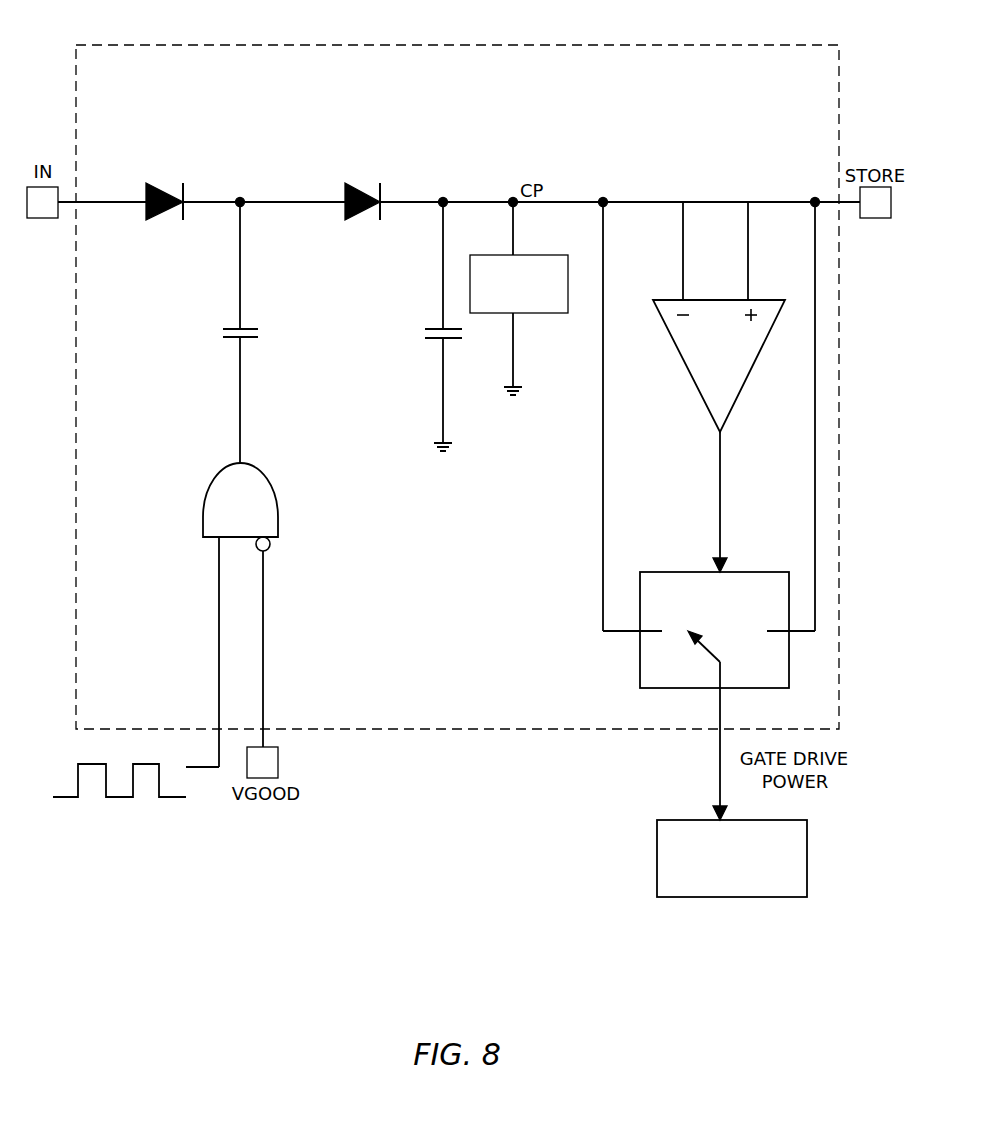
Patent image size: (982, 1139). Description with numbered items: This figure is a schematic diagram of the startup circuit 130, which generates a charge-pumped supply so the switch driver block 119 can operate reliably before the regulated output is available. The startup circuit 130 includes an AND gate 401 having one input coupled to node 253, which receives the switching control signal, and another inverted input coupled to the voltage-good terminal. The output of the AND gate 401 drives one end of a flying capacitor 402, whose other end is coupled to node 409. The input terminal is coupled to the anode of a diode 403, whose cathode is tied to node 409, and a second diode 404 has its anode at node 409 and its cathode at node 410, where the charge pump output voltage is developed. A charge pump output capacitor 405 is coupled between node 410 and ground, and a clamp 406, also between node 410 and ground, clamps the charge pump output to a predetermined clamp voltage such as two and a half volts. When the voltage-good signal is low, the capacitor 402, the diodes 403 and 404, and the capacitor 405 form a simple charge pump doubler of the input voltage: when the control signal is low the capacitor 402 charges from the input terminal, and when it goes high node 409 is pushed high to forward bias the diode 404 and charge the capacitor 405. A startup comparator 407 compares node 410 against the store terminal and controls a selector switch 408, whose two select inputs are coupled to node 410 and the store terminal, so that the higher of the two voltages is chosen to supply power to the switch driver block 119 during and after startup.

The startup circuit 130 is at (472, 102).
The AND gate 401 is at (209, 490).
The flying capacitor 402 is at (232, 338).
The diode 403 is at (167, 215).
The diode 404 is at (363, 215).
The charge pump output capacitor 405 is at (432, 340).
The clamp 406 is at (503, 306).
The startup comparator 407 is at (690, 377).
The selector switch 408 is at (640, 650).
The node 409 is at (243, 192).
The node 410 is at (445, 195).
The node 253 is at (219, 676).
The switch driver block 119 is at (657, 856).